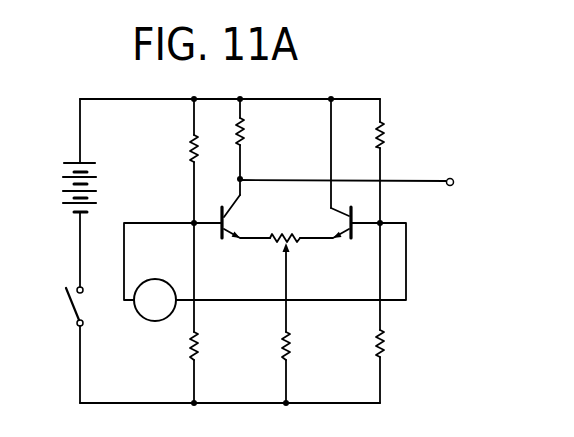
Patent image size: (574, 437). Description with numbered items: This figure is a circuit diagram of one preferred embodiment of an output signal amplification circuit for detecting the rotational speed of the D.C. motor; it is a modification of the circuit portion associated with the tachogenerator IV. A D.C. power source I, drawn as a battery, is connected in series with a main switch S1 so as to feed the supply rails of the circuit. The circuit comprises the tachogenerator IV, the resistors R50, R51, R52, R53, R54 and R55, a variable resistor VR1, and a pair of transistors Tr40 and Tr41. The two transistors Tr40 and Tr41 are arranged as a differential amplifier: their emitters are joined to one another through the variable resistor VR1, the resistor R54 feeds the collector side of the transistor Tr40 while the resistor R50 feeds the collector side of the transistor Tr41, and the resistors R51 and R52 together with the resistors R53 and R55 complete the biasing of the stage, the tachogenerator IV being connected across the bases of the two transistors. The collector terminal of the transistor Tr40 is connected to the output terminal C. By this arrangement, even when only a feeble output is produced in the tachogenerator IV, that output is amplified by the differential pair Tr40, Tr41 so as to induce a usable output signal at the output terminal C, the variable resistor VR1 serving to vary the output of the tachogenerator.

The D.C. power source I is at (62, 183).
The main switch S1 is at (66, 299).
The resistor R51 is at (176, 150).
The resistor R54 is at (261, 131).
The resistor R50 is at (401, 135).
The resistor R53 is at (215, 346).
The resistor R55 is at (307, 346).
The resistor R52 is at (401, 343).
The output terminal C is at (457, 173).
The transistor Tr40 is at (227, 218).
The transistor Tr41 is at (347, 242).
The variable resistor VR1 is at (290, 256).
The tachogenerator IV is at (153, 321).